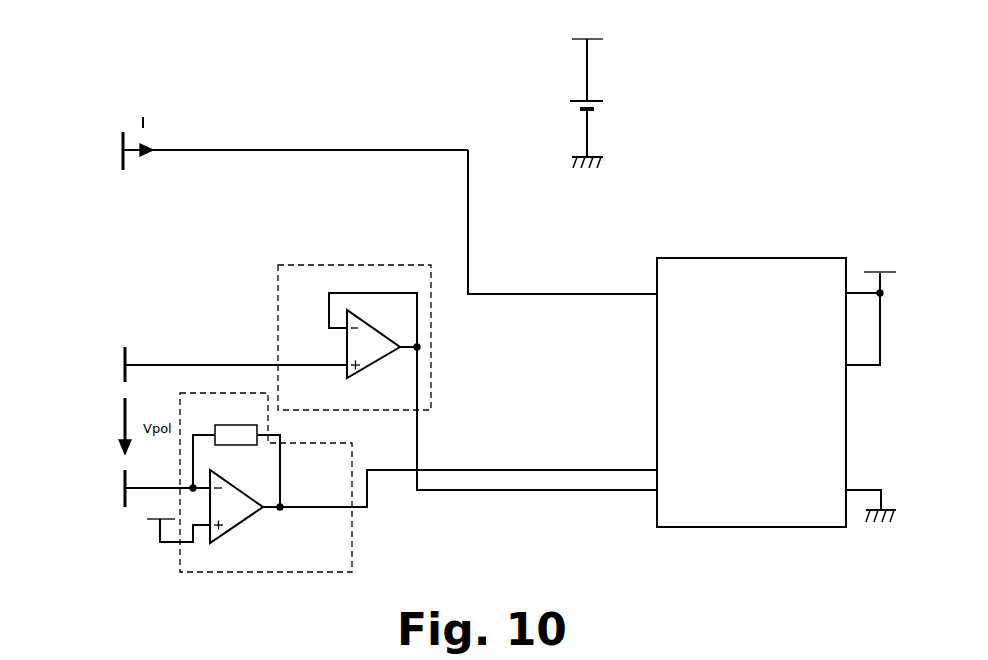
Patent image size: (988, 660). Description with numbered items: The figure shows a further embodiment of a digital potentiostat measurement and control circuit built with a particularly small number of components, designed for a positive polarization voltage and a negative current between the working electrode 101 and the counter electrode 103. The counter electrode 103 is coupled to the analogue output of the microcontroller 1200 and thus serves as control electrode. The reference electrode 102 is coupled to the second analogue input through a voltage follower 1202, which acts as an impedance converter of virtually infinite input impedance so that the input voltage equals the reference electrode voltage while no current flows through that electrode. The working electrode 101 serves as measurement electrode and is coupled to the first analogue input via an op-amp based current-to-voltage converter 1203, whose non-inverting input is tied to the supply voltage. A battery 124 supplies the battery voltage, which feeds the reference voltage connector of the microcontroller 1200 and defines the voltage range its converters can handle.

The counter electrode 103 is at (117, 178).
The reference electrode 102 is at (112, 355).
The working electrode 101 is at (108, 503).
The voltage follower 1202 is at (320, 277).
The current-to-voltage converter 1203 is at (215, 553).
The microcontroller 1200 is at (783, 509).
The battery 124 is at (620, 96).